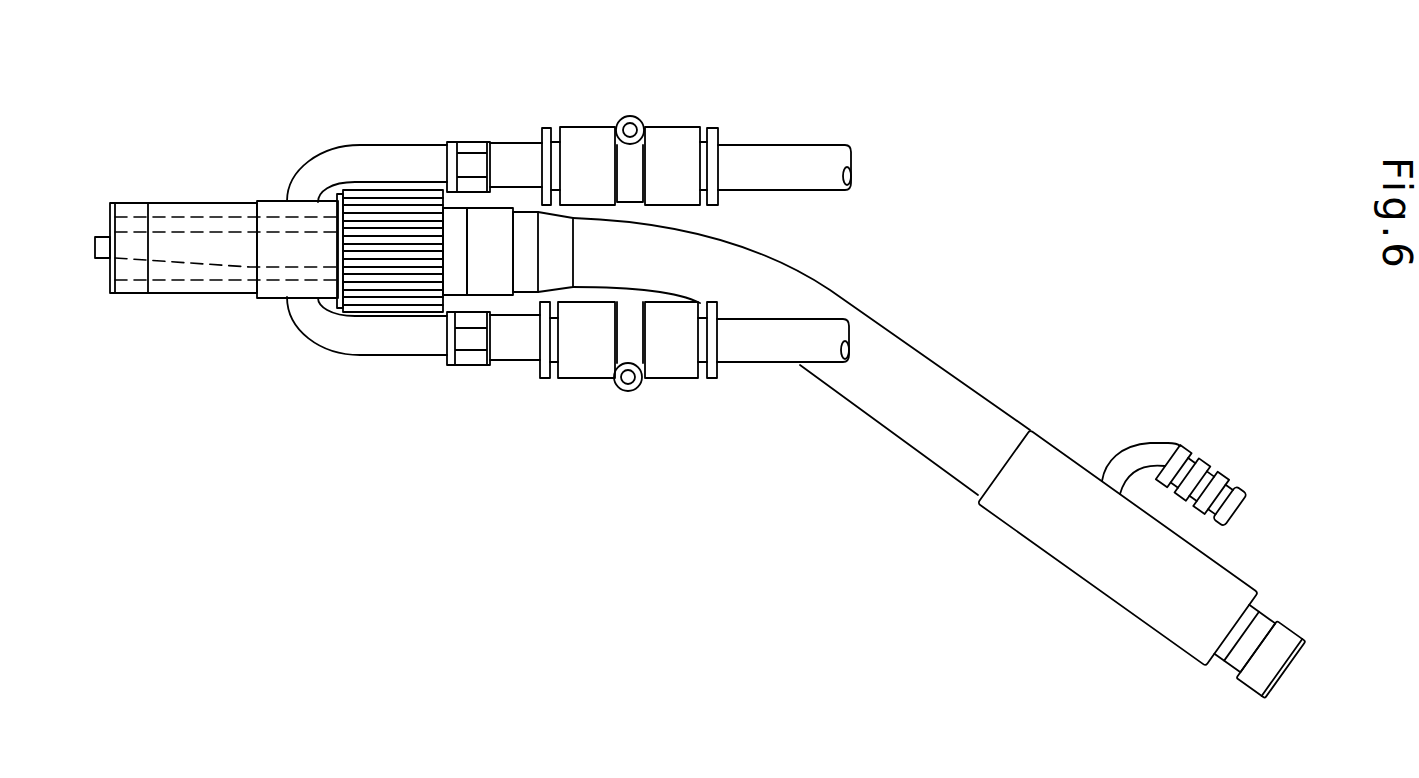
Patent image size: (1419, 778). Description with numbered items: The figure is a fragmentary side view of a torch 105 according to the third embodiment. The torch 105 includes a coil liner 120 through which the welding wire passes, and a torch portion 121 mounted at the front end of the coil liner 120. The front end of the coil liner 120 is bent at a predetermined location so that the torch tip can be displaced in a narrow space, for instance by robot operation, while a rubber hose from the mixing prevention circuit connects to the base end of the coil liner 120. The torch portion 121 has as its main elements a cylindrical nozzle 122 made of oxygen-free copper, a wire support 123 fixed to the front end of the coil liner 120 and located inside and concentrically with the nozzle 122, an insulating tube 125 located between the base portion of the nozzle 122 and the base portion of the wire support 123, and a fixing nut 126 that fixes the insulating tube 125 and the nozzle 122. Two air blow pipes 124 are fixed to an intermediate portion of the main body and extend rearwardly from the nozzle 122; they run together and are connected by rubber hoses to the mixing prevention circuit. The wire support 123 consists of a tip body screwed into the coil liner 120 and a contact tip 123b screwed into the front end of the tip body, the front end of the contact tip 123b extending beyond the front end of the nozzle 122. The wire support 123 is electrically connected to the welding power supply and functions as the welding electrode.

The torch 105 is at (943, 95).
The coil liner 120 is at (780, 278).
The torch portion 121 is at (312, 123).
The cylindrical nozzle 122 is at (177, 195).
The wire support 123 is at (255, 230).
The contact tip 123b is at (102, 258).
The air blow pipes 124 is at (350, 160).
The insulating tube 125 is at (478, 200).
The fixing nut 126 is at (408, 187).